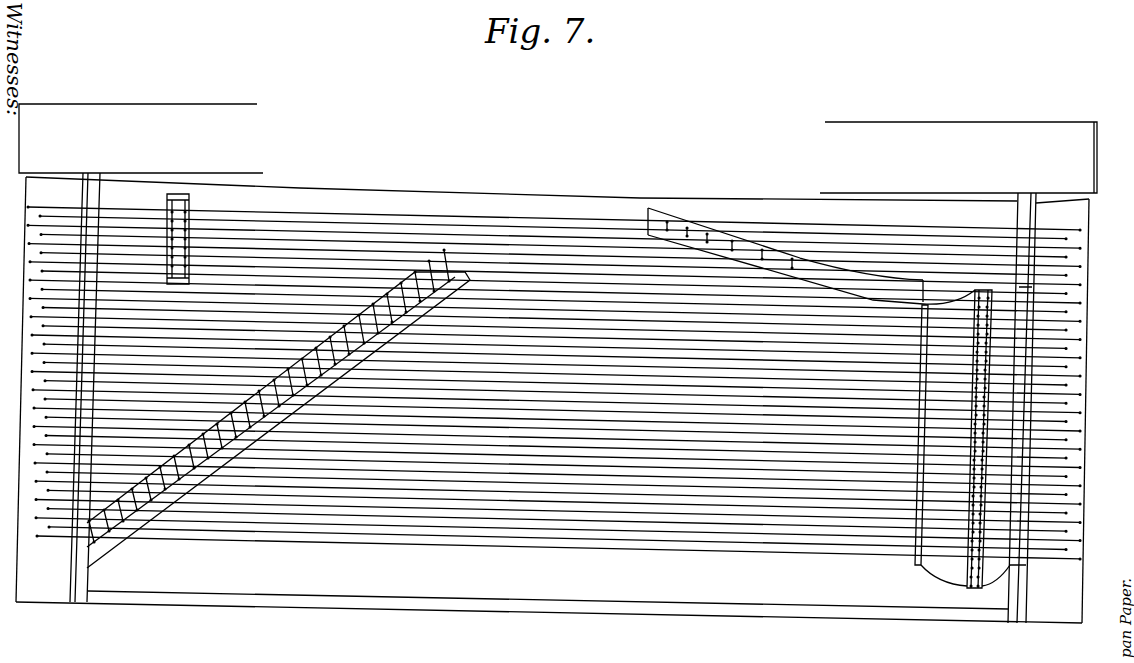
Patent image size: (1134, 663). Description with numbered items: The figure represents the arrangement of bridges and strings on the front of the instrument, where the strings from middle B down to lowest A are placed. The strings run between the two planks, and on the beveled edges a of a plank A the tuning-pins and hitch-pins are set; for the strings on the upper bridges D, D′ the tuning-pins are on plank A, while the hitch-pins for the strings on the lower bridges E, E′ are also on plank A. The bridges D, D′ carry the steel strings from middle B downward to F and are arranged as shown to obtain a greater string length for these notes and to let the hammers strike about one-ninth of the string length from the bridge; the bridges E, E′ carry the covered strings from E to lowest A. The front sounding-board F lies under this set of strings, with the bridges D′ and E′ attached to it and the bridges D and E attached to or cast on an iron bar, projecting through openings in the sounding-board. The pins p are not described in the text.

The plank A is at (1087, 312).
The beveled edge a is at (1087, 452).
The thread pins p is at (24, 371).
The front sounding-board F is at (554, 383).
The lower bridge E is at (278, 409).
The lower bridge E' is at (973, 437).
The upper bridge D is at (811, 256).
The upper bridge D' is at (194, 239).